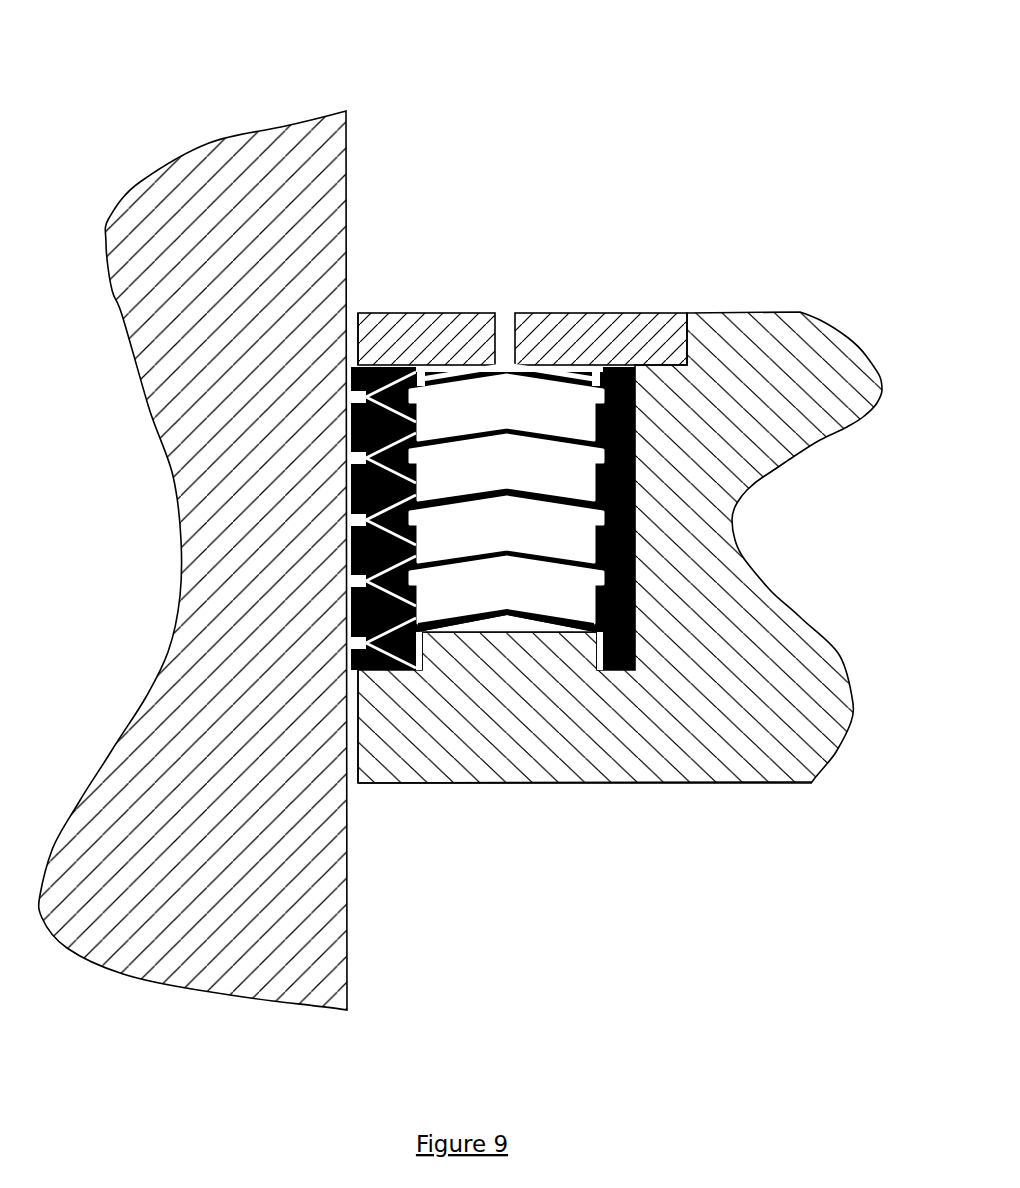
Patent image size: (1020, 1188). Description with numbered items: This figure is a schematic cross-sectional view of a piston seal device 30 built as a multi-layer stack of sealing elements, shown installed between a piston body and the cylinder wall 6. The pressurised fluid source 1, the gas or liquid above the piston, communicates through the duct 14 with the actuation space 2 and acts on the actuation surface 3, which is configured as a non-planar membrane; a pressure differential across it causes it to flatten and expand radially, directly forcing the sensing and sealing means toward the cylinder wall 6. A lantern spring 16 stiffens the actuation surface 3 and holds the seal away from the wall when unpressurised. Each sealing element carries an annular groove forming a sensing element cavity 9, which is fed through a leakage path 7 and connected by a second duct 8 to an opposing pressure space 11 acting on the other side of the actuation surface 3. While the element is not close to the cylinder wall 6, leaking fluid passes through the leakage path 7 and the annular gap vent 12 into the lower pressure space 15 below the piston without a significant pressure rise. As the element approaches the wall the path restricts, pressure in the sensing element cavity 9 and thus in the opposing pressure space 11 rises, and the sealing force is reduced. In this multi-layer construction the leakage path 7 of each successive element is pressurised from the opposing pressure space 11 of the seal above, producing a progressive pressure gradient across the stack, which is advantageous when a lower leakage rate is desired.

The pressurised fluid source 1 is at (700, 85).
The actuation space 2 is at (560, 375).
The actuation surface 3 is at (455, 375).
The cylinder wall 6 is at (350, 150).
The leakage path 7 is at (427, 658).
The second duct 8 is at (423, 657).
The sensing element cavity 9 is at (357, 520).
The opposing pressure space 11 is at (517, 628).
The vent 12 is at (360, 300).
The duct 14 is at (505, 328).
The lower pressure space 15 is at (608, 963).
The lantern spring 16 is at (577, 630).
The piston seal device 30 is at (743, 836).